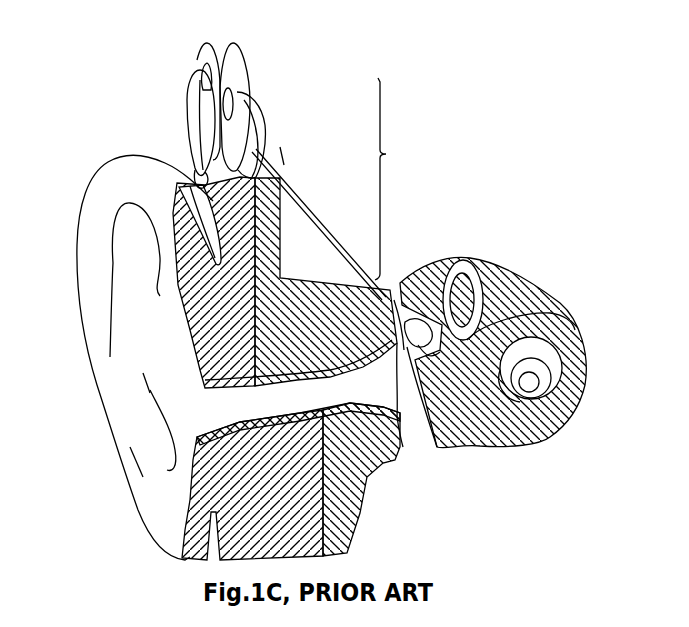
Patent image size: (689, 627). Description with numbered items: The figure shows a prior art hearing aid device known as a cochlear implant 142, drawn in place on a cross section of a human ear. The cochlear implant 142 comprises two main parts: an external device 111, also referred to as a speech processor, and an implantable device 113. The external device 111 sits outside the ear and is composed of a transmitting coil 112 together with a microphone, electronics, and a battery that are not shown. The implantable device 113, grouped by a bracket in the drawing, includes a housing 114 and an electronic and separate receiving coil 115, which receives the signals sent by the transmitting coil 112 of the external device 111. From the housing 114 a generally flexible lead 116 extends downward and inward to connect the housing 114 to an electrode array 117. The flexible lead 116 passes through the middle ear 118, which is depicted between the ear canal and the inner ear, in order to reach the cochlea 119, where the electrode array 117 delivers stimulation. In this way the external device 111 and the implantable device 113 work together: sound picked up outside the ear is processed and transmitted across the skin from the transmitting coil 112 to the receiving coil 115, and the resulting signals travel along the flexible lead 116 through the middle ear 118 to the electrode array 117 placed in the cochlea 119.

The external device 111 is at (196, 206).
The transmitting coil 112 is at (187, 108).
The implantable device 113 is at (400, 179).
The housing 114 is at (262, 105).
The receiving coil 115 is at (247, 52).
The flexible lead 116 is at (340, 243).
The electrode array 117 is at (523, 437).
The middle ear 118 is at (441, 447).
The cochlea 119 is at (577, 380).
The cochlear implant 142 is at (236, 106).